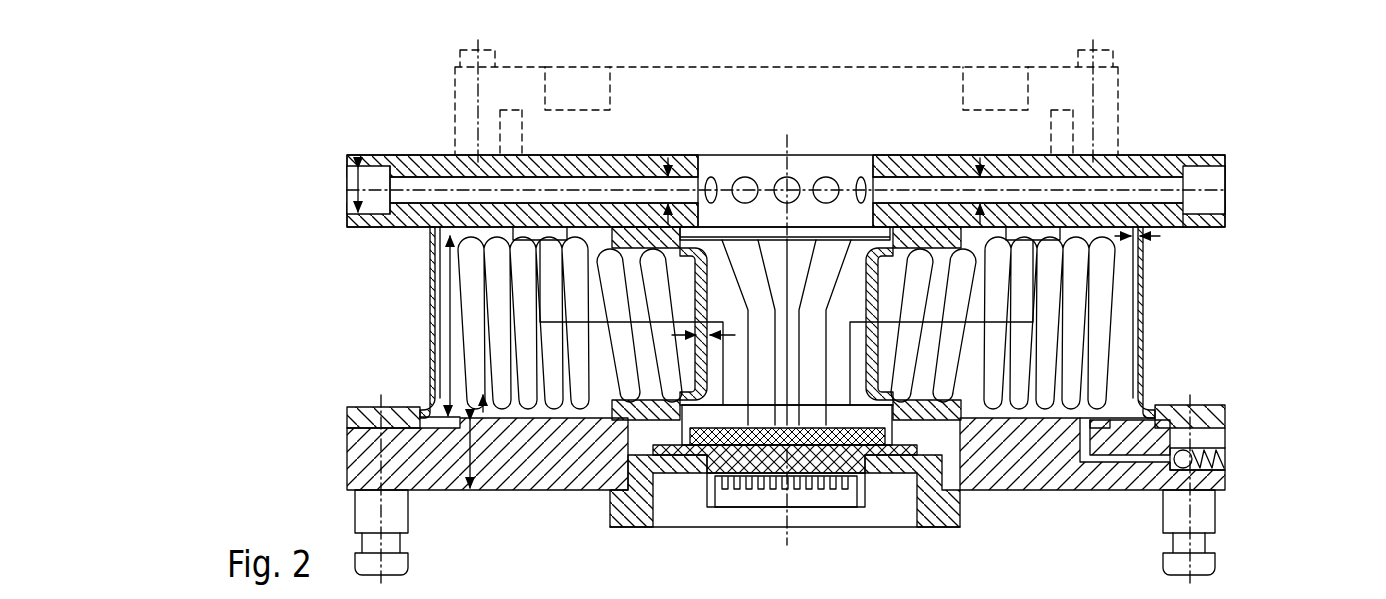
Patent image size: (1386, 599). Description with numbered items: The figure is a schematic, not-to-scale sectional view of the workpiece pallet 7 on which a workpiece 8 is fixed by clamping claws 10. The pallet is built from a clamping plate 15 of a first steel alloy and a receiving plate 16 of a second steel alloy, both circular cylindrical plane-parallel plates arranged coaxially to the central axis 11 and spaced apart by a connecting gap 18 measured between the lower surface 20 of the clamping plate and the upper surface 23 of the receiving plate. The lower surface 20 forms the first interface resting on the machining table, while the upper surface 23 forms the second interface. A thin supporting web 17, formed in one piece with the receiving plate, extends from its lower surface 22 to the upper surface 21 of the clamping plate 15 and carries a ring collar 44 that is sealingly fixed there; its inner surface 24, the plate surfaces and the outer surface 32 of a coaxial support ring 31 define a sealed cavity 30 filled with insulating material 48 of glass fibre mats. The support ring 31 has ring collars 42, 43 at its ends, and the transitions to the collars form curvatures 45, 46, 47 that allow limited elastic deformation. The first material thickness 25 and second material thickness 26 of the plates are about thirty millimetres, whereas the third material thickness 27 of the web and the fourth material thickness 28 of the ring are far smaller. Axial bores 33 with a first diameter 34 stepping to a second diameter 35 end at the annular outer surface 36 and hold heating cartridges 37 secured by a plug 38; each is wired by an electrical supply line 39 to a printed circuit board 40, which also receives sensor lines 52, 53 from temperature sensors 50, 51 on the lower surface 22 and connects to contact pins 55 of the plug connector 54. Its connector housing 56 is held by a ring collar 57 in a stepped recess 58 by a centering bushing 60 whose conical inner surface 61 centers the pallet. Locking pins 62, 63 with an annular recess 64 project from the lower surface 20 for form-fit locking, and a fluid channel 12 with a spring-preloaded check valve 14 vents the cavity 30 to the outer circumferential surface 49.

The workpiece pallet 7 is at (188, 86).
The workpiece 8 is at (893, 85).
The clamping claws 10 is at (465, 90).
The central axis 11 is at (788, 148).
The fluid channel 12 is at (1112, 456).
The spring-preloaded check valve 14 is at (1228, 458).
The clamping plate 15 is at (357, 457).
The receiving plate 16 is at (398, 157).
The supporting web 17 is at (435, 310).
The connecting gap 18 is at (450, 263).
The lower surface 20 is at (425, 492).
The upper surface 21 is at (430, 398).
The lower surface 22 is at (1207, 224).
The upper surface 23 is at (1202, 155).
The inner surface 24 is at (1140, 300).
The first material thickness 25 is at (450, 428).
The second material thickness 26 is at (985, 227).
The third material thickness 27 is at (1136, 228).
The fourth material thickness 28 is at (752, 262).
The cavity 30 is at (471, 490).
The support ring 31 is at (860, 178).
The outer surface 32 is at (660, 330).
The axial bores 33 is at (595, 155).
The first diameter 34 is at (650, 227).
The second diameter 35 is at (350, 185).
The annular outer surface 36 is at (1226, 163).
The heating cartridges 37 is at (450, 178).
The plug 38 is at (373, 207).
The electrical supply line 39 is at (711, 178).
The printed circuit board 40 is at (878, 446).
The ring collar 42 is at (627, 227).
The ring collar 43 is at (1040, 428).
The ring collar 44 is at (1215, 410).
The curvature 45 is at (695, 255).
The curvature 46 is at (880, 400).
The curvature 47 is at (1142, 410).
The insulating material 48 is at (880, 290).
The outer circumferential surface 49 is at (1232, 448).
The temperature sensor 50 is at (527, 233).
The temperature sensor 51 is at (1060, 232).
The sensor line 52 is at (590, 330).
The sensor line 53 is at (1036, 280).
The plug connector 54 is at (742, 502).
The contact pins 55 is at (840, 478).
The connector housing 56 is at (706, 480).
The ring collar 57 is at (912, 452).
The recess 58 is at (905, 440).
The centering bushing 60 is at (612, 510).
The inner surface 61 is at (712, 465).
The locking pin 62 is at (360, 505).
The locking pin 63 is at (1208, 515).
The recess 64 is at (400, 543).